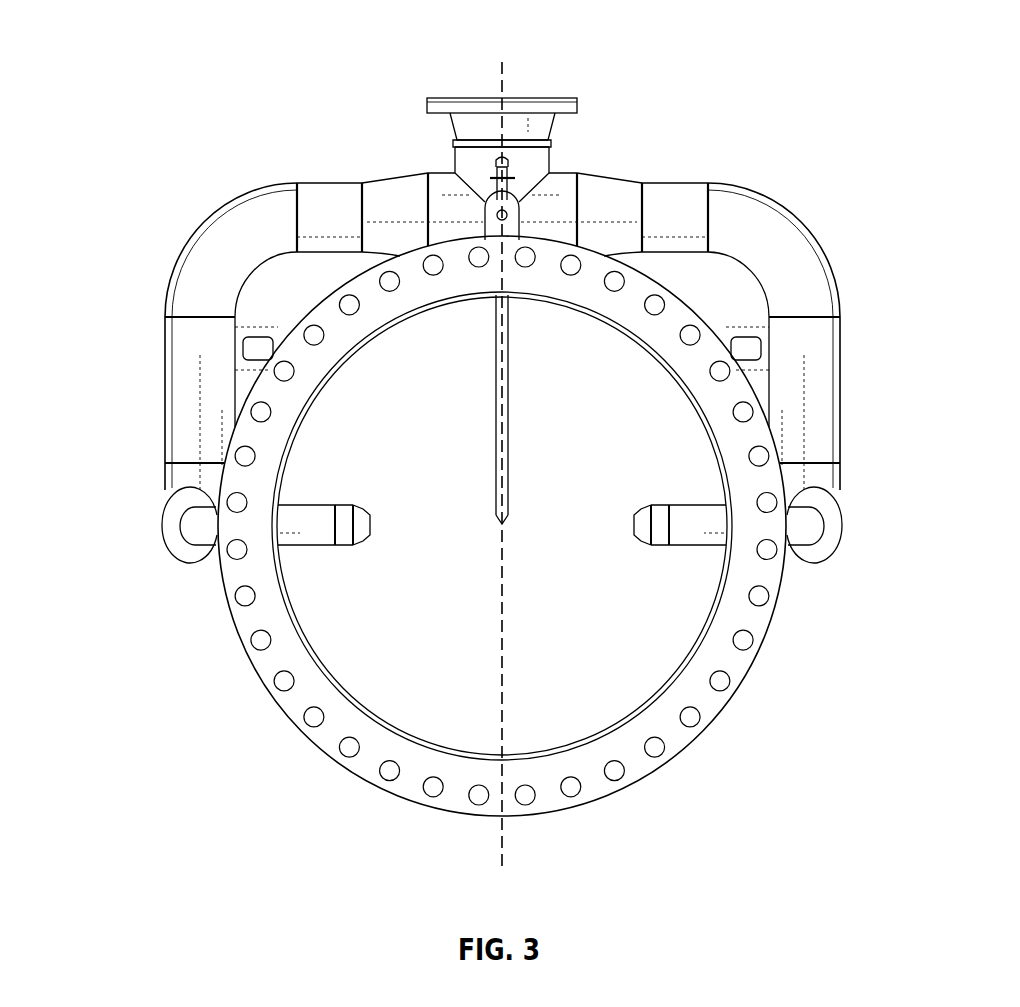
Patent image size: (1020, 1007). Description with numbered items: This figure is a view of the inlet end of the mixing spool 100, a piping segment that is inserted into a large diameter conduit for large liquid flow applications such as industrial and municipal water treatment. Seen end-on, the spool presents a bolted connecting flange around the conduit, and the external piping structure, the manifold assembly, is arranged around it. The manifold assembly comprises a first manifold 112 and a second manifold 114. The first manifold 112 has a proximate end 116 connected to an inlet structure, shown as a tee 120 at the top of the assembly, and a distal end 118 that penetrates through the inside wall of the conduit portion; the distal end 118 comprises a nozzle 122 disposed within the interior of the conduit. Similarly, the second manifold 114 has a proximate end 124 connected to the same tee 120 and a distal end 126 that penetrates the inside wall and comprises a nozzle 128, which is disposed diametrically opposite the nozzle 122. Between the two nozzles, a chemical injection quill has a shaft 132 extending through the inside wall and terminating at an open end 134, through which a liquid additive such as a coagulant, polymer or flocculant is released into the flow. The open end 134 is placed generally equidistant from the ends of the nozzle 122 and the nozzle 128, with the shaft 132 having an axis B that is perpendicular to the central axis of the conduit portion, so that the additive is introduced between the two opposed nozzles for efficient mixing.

The mixing spool 100 is at (150, 54).
The first manifold 112 is at (154, 270).
The second manifold 114 is at (848, 333).
The proximate end 116 is at (445, 197).
The tee 120 is at (450, 130).
The proximate end 124 is at (550, 190).
The distal end 118 is at (195, 528).
The distal end 126 is at (815, 527).
The nozzle 122 is at (362, 548).
The nozzle 128 is at (636, 548).
The shaft 132 is at (510, 385).
The open end 134 is at (508, 522).
The axis B is at (503, 692).